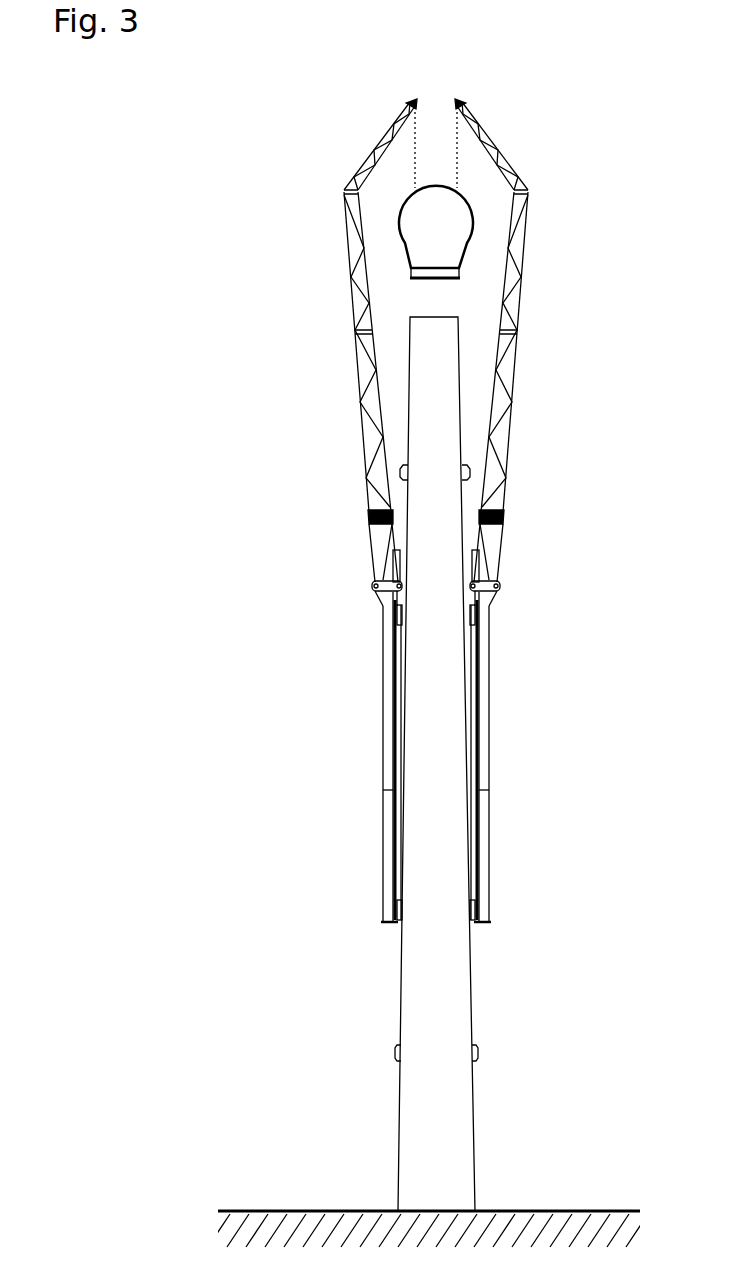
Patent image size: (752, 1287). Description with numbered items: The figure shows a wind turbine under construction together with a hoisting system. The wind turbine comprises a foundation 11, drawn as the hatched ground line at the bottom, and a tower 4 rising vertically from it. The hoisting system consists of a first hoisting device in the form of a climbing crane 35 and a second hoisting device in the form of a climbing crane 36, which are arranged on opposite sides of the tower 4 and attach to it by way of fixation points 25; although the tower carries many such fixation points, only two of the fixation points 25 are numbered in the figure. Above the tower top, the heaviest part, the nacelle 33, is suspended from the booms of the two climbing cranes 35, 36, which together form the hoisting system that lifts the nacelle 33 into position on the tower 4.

The tower 4 is at (457, 1117).
The foundation 11 is at (368, 1211).
The fixation points 25 is at (395, 1052).
The nacelle 33 is at (435, 280).
The climbing crane 35 is at (348, 156).
The climbing crane 36 is at (518, 481).